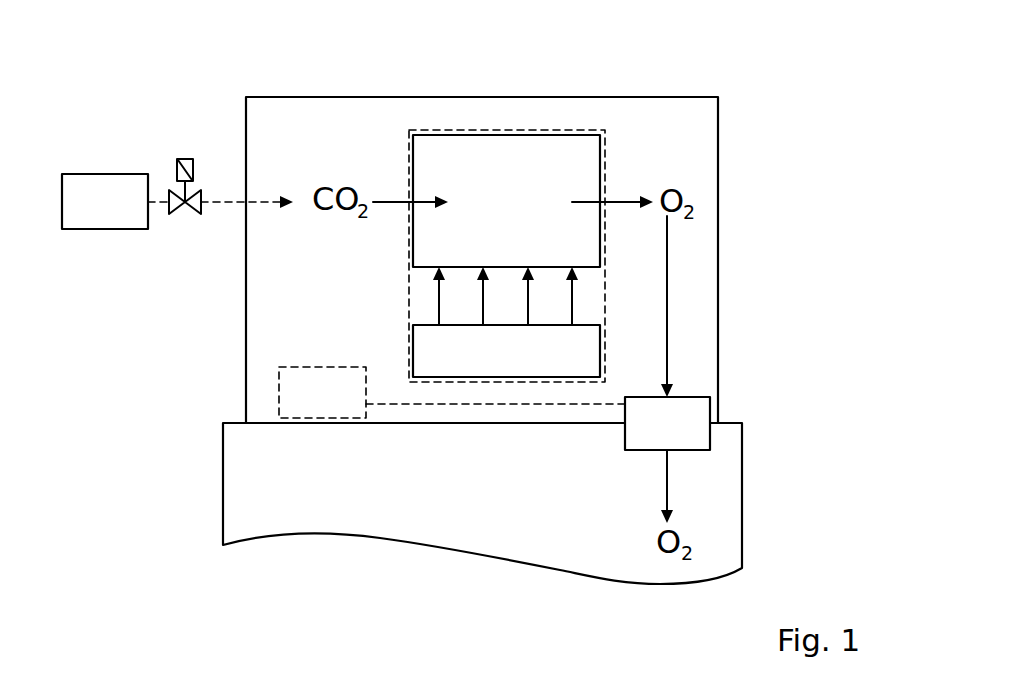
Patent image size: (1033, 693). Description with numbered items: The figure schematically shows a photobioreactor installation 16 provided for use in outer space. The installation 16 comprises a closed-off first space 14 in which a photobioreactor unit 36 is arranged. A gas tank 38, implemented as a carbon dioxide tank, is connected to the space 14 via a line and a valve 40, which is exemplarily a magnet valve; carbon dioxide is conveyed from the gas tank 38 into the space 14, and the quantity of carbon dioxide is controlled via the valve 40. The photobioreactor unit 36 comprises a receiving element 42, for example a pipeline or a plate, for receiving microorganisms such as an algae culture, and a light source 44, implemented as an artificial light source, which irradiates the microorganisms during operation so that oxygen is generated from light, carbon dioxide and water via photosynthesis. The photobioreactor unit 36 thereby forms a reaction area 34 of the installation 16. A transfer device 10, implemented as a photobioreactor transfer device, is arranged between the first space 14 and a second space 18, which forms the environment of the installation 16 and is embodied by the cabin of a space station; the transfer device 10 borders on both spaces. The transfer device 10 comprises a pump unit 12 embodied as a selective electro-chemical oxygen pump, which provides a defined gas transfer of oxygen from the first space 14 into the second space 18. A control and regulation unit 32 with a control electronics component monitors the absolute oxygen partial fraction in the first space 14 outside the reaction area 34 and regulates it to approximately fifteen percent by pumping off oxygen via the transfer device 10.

The transfer device 10 is at (694, 386).
The pump unit 12 is at (692, 435).
The space 14 is at (695, 171).
The installation 16 is at (689, 97).
The second space 18 is at (255, 480).
The control and regulation unit 32 is at (279, 388).
The reaction area 34 is at (420, 279).
The photobioreactor unit 36 is at (566, 130).
The gas tank 38 is at (105, 200).
The valve 40 is at (183, 159).
The receiving element 42 is at (468, 168).
The light source 44 is at (478, 355).